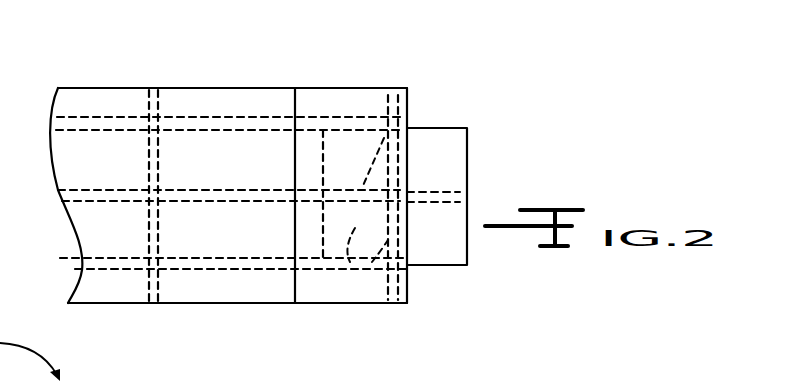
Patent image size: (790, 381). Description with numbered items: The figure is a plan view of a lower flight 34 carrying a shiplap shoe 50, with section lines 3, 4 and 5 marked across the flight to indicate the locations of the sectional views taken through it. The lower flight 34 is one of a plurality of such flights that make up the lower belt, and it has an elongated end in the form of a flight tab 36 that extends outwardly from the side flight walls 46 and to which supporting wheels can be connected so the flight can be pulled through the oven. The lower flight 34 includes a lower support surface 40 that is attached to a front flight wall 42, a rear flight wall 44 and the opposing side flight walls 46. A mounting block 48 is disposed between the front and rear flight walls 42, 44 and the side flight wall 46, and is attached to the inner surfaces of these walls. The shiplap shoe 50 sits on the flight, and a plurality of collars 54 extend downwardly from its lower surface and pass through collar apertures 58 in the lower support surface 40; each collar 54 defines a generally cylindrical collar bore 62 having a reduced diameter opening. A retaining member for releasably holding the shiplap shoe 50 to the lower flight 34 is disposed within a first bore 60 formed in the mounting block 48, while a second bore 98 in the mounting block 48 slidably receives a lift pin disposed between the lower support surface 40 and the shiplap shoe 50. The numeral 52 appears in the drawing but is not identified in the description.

The lower flight 34 is at (121, 60).
The flight tab 36 is at (460, 258).
The lower support surface 40 is at (128, 239).
The front flight wall 42 is at (184, 117).
The rear flight wall 44 is at (207, 270).
The side flight walls 46 is at (397, 110).
The mounting block 48 is at (315, 152).
The shiplap shoe 50 is at (295, 279).
The lower component 52 is at (574, 375).
The collars 54 is at (162, 375).
The collar apertures 58 is at (347, 375).
The first bore 60 is at (366, 164).
The collar bore 62 is at (407, 375).
The second bore 98 is at (410, 268).
The section line 3- 3 is at (367, 50).
The section line 4- 4 is at (273, 172).
The section line 5- 5 is at (343, 342).